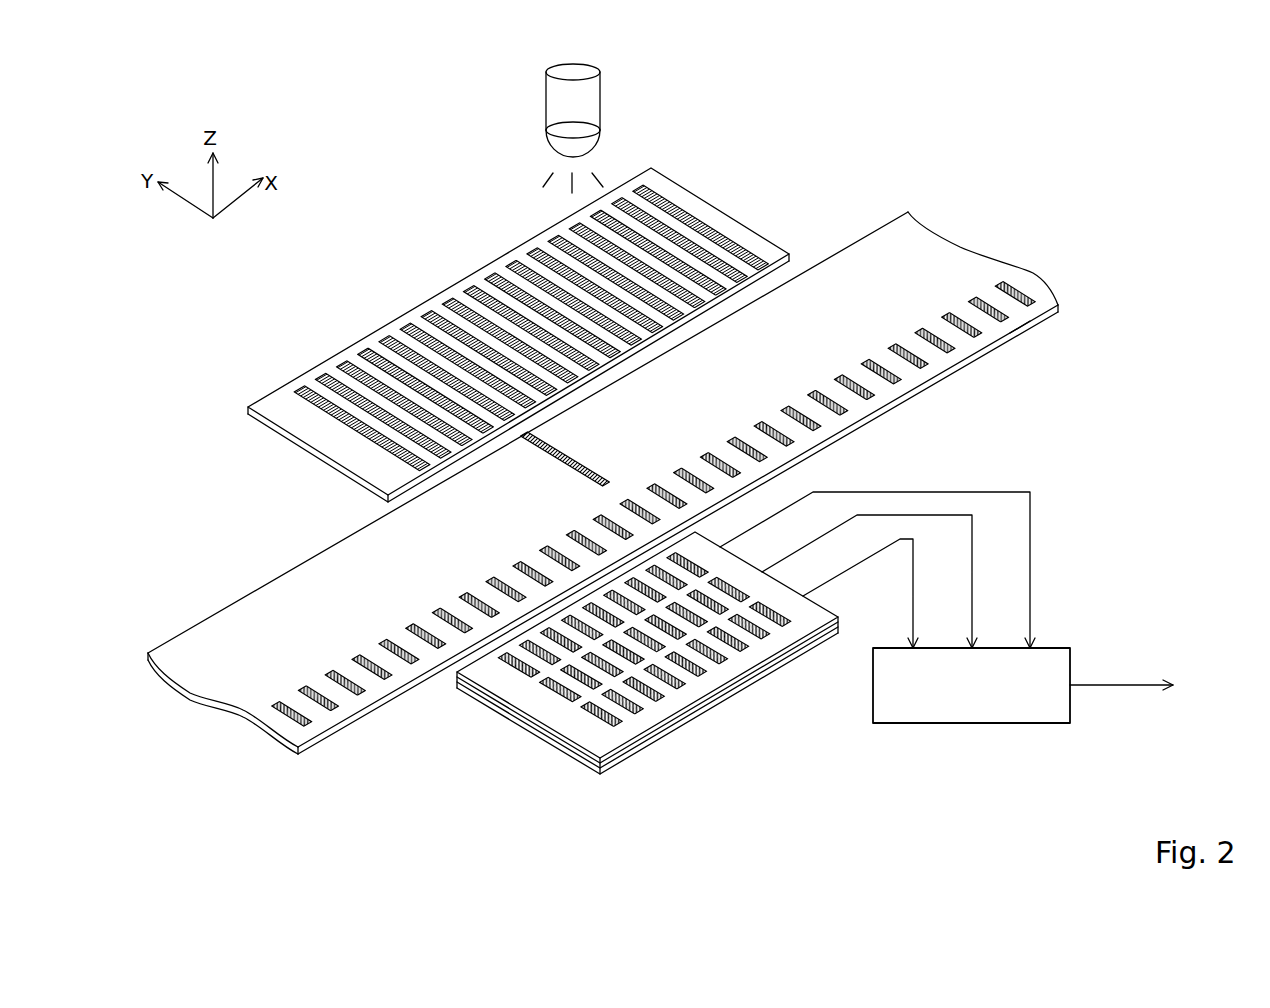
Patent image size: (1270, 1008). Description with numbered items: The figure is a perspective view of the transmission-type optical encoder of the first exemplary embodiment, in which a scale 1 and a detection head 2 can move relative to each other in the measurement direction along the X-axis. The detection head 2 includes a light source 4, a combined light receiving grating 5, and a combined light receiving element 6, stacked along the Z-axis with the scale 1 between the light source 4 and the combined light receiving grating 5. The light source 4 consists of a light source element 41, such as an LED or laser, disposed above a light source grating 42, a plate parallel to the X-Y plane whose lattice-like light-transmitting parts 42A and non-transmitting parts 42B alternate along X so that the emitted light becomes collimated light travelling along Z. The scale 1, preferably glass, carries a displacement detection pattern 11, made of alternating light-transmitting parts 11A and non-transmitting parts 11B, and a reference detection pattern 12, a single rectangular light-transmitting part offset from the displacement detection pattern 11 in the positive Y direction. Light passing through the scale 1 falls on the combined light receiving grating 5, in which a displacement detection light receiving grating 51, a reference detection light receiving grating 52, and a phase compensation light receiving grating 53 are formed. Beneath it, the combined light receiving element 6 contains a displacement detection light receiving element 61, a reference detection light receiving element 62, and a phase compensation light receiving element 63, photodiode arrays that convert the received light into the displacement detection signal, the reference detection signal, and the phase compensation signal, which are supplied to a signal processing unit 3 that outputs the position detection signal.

The scale 1 is at (918, 227).
The displacement detection pattern 11 is at (701, 469).
The light-transmitting parts 11A is at (1020, 332).
The non-transmitting parts 11B is at (962, 325).
The reference detection pattern 12 is at (567, 452).
The detection head 2 is at (1143, 548).
The signal processing unit 3 is at (968, 723).
The light source 4 is at (758, 58).
The light source element 41 is at (600, 102).
The light source grating 42 is at (518, 301).
The light-transmitting parts 42A is at (432, 302).
The non-transmitting parts 42B is at (448, 318).
The combined light receiving grating 5 is at (725, 682).
The displacement detection light receiving grating 51 is at (770, 614).
The reference detection light receiving grating 52 is at (687, 565).
The phase compensation light receiving grating 53 is at (505, 673).
The combined light receiving element 6 is at (647, 745).
The displacement detection light receiving element 61 is at (460, 822).
The reference detection light receiving element 62 is at (523, 725).
The phase compensation light receiving element 63 is at (490, 703).